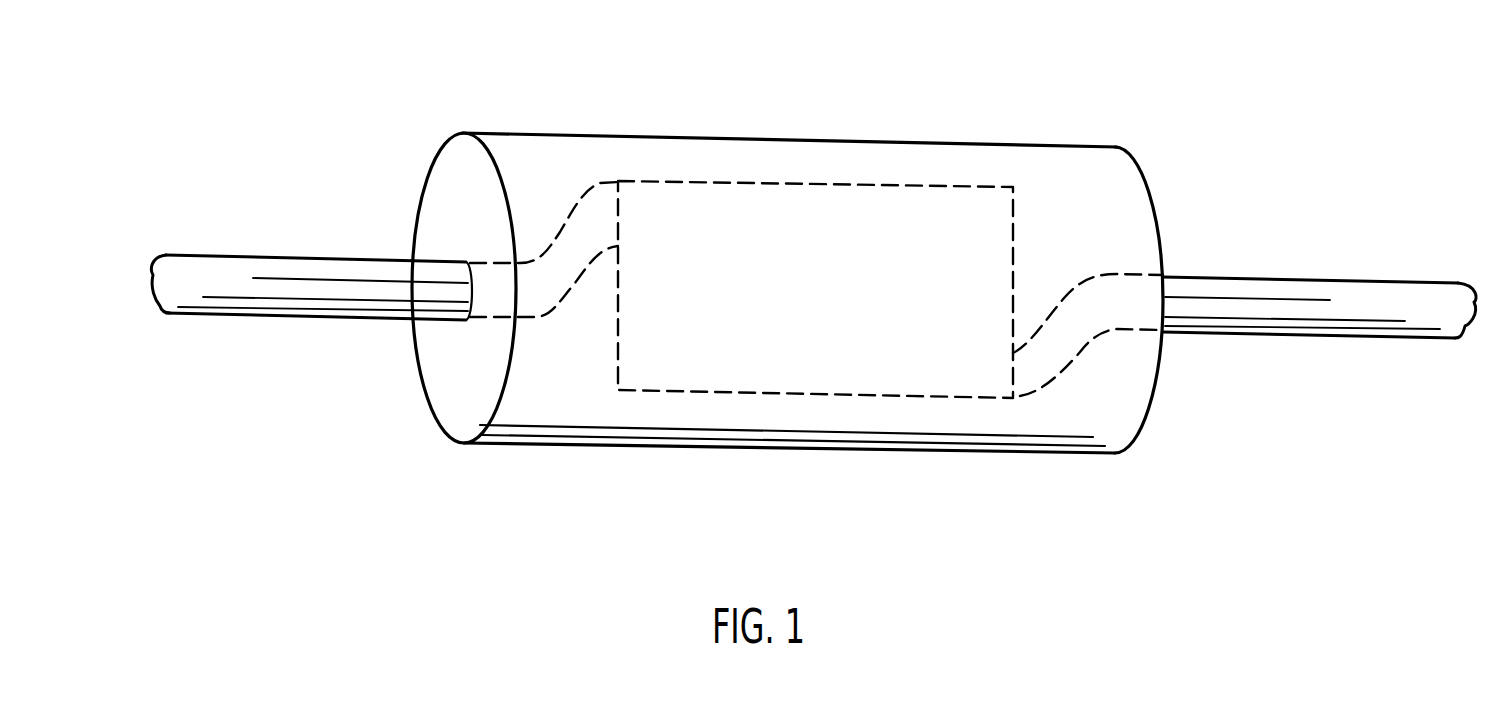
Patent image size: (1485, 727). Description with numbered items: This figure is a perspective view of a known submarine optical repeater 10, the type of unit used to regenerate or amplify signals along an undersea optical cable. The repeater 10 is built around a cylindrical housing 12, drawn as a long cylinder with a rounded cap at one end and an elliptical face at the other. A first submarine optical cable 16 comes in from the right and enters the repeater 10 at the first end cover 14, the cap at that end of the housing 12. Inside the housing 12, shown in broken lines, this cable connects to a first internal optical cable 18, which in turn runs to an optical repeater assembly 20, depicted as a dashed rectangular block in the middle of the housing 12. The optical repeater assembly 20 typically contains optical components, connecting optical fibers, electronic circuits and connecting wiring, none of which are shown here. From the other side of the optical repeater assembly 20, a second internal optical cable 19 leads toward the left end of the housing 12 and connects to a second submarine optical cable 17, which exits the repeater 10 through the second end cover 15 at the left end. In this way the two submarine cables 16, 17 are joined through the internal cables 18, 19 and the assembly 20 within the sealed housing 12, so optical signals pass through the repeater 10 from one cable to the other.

The submarine optical repeater 10 is at (842, 452).
The cylindrical housing 12 is at (758, 140).
The first end cover 14 is at (1157, 383).
The second end cover 15 is at (450, 390).
The first submarine optical cable 16 is at (1258, 277).
The second submarine optical cable 17 is at (230, 314).
The first internal optical cable 18 is at (1048, 388).
The second internal optical cable 19 is at (538, 318).
The optical repeater assembly 20 is at (773, 368).